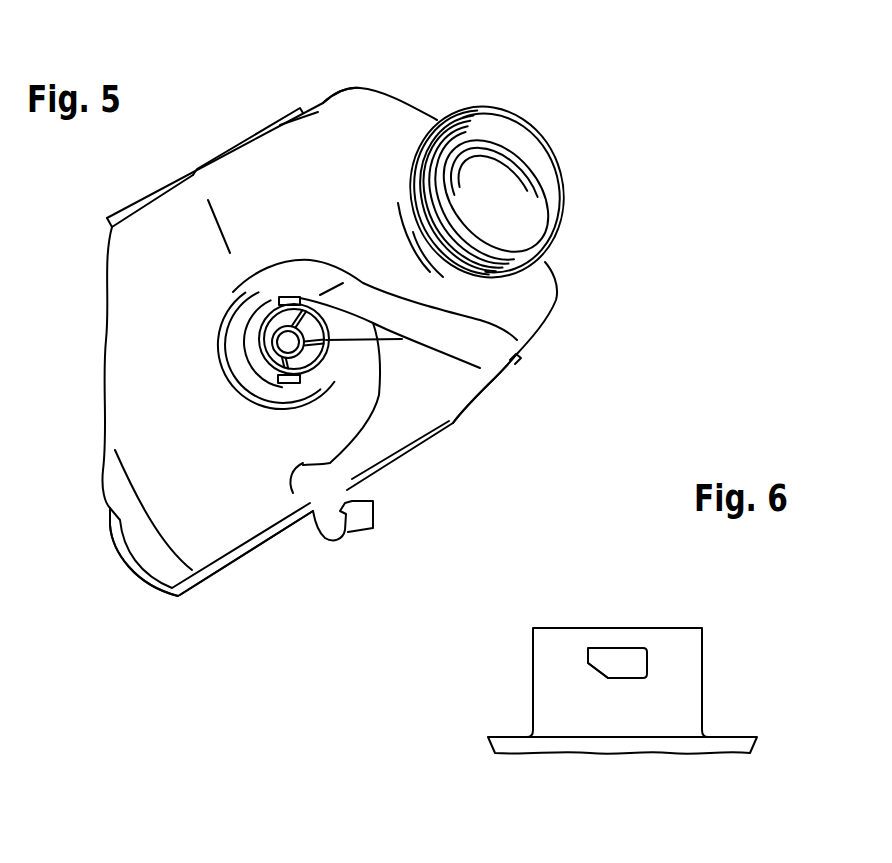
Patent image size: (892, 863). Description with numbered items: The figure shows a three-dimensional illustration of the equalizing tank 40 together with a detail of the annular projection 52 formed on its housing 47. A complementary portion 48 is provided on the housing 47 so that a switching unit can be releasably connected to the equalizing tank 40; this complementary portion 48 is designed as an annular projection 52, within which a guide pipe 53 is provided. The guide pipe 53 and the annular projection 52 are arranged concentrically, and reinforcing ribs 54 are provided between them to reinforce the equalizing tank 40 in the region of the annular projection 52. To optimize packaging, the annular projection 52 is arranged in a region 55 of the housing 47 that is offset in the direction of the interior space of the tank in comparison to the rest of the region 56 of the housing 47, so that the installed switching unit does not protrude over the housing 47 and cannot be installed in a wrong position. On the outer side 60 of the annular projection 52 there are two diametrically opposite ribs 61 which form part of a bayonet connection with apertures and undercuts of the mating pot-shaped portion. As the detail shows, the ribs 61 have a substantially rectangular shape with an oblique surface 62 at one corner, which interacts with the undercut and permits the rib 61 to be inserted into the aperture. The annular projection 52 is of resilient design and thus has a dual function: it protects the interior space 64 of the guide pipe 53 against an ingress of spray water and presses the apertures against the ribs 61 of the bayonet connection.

In FIG. 5, the equalizing tank 40 is at (572, 120).
In FIG. 5, the housing 47 is at (353, 148).
In FIG. 5, the complementary portion 48 is at (343, 378).
In FIG. 5, the annular projection 52 is at (250, 335).
In FIG. 6, the annular projection 52 is at (550, 695).
In FIG. 5, the guide pipe 53 is at (307, 320).
In FIG. 5, the reinforcing ribs 54 is at (465, 394).
In FIG. 5, the region of the housing 55 is at (210, 532).
In FIG. 5, the rest of the region of the housing 56 is at (330, 137).
In FIG. 6, the outer side of the annular projection 60 is at (705, 688).
In FIG. 5, the ribs 61 is at (287, 300).
In FIG. 6, the ribs 61 is at (620, 655).
In FIG. 6, the oblique surface 62 is at (597, 673).
In FIG. 5, the interior space of the guide pipe 64 is at (290, 343).